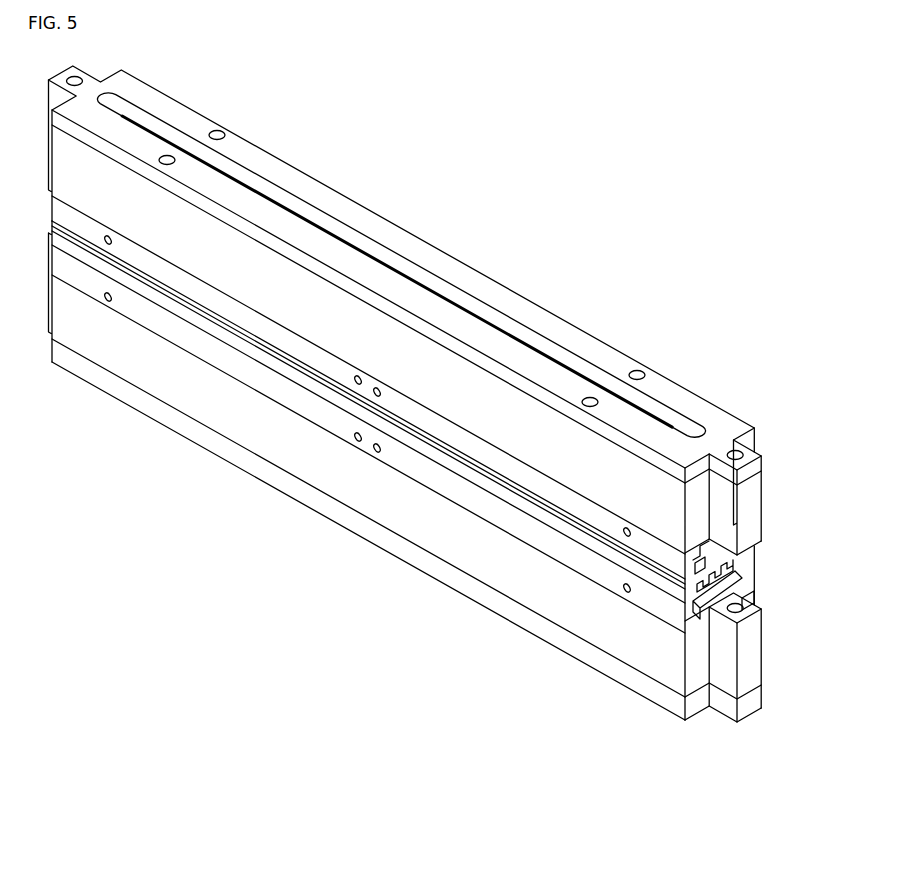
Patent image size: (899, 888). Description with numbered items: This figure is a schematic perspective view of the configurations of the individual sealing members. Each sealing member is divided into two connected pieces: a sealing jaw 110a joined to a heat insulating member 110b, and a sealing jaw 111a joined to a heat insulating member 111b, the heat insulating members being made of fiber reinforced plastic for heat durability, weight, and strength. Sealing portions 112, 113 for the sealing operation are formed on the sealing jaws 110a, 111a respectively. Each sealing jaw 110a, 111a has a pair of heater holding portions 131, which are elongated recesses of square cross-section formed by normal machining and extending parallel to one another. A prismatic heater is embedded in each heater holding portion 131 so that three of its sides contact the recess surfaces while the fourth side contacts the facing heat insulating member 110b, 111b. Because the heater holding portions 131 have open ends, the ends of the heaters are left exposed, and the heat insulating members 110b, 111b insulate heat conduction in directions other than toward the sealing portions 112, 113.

The sealing jaw 110a is at (752, 572).
The heat insulating member 110b is at (510, 612).
The sealing jaw 111a is at (727, 567).
The heat insulating member 111b is at (610, 478).
The sealing portion 112 is at (700, 607).
The sealing portion 113 is at (700, 593).
The heater holding portion 131 is at (700, 553).